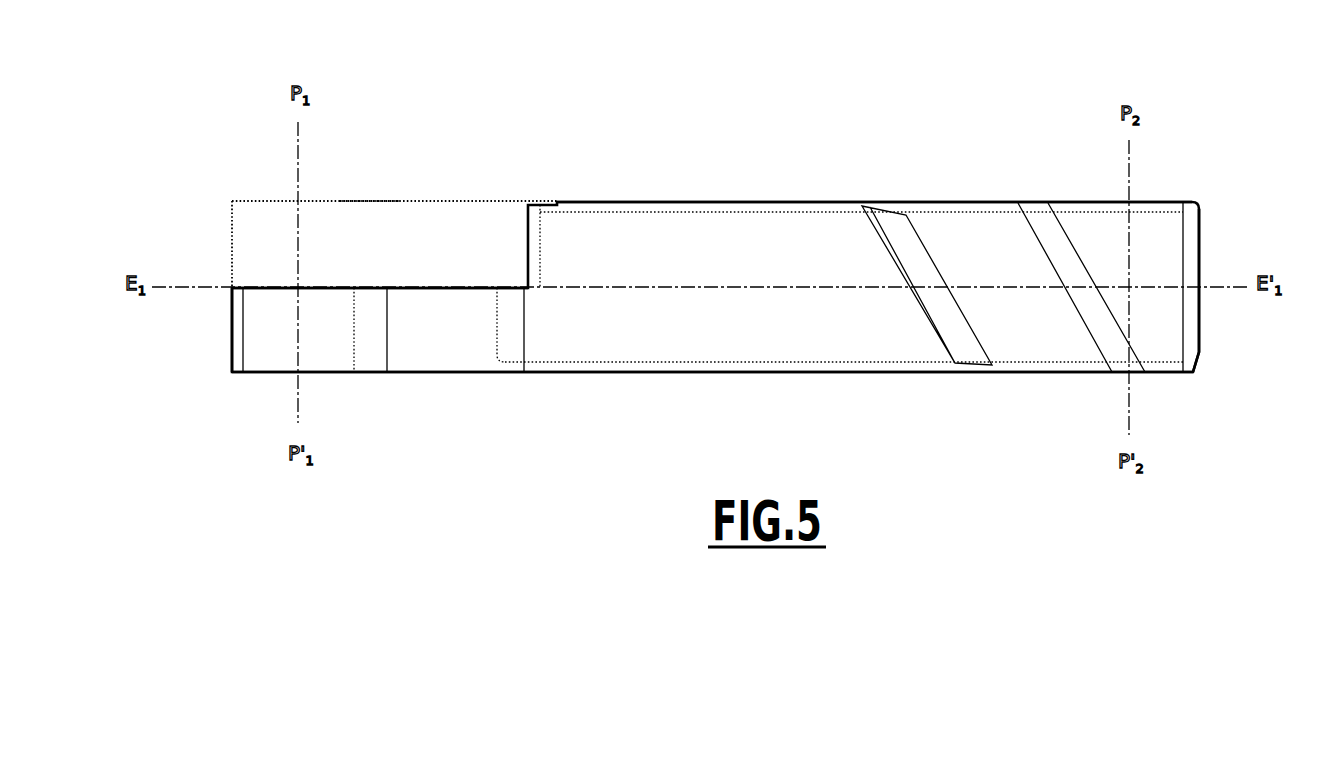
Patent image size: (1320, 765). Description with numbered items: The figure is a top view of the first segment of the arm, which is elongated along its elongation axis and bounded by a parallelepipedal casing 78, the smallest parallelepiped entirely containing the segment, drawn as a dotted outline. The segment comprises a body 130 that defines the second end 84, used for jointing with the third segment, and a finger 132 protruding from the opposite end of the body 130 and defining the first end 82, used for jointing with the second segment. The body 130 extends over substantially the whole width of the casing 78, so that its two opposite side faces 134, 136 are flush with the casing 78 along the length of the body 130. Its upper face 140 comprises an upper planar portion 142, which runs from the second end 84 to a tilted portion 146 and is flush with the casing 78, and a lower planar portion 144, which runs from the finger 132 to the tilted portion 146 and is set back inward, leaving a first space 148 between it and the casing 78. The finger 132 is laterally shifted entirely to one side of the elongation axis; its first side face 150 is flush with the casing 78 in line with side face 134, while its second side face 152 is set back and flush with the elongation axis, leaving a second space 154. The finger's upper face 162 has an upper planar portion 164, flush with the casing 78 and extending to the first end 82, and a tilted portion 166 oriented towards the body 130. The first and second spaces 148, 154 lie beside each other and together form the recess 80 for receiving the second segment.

The parallelepipedal casing 78 is at (431, 201).
The recess 80 is at (283, 228).
The first end 82 is at (230, 345).
The second end 84 is at (1192, 252).
The body 130 is at (808, 182).
The finger 132 is at (350, 400).
The side face 134 is at (852, 373).
The side face 136 is at (686, 202).
The upper face 140 is at (948, 250).
The upper planar portion 142 is at (1158, 226).
The lower planar portion 144 is at (742, 330).
The tilted portion 146 is at (1040, 330).
The first space 148 is at (632, 244).
The first side face 150 is at (398, 373).
The second side face 152 is at (354, 288).
The second space 154 is at (347, 232).
The upper face 162 is at (331, 321).
The upper planar portion 164 is at (267, 350).
The tilted portion 166 is at (445, 350).